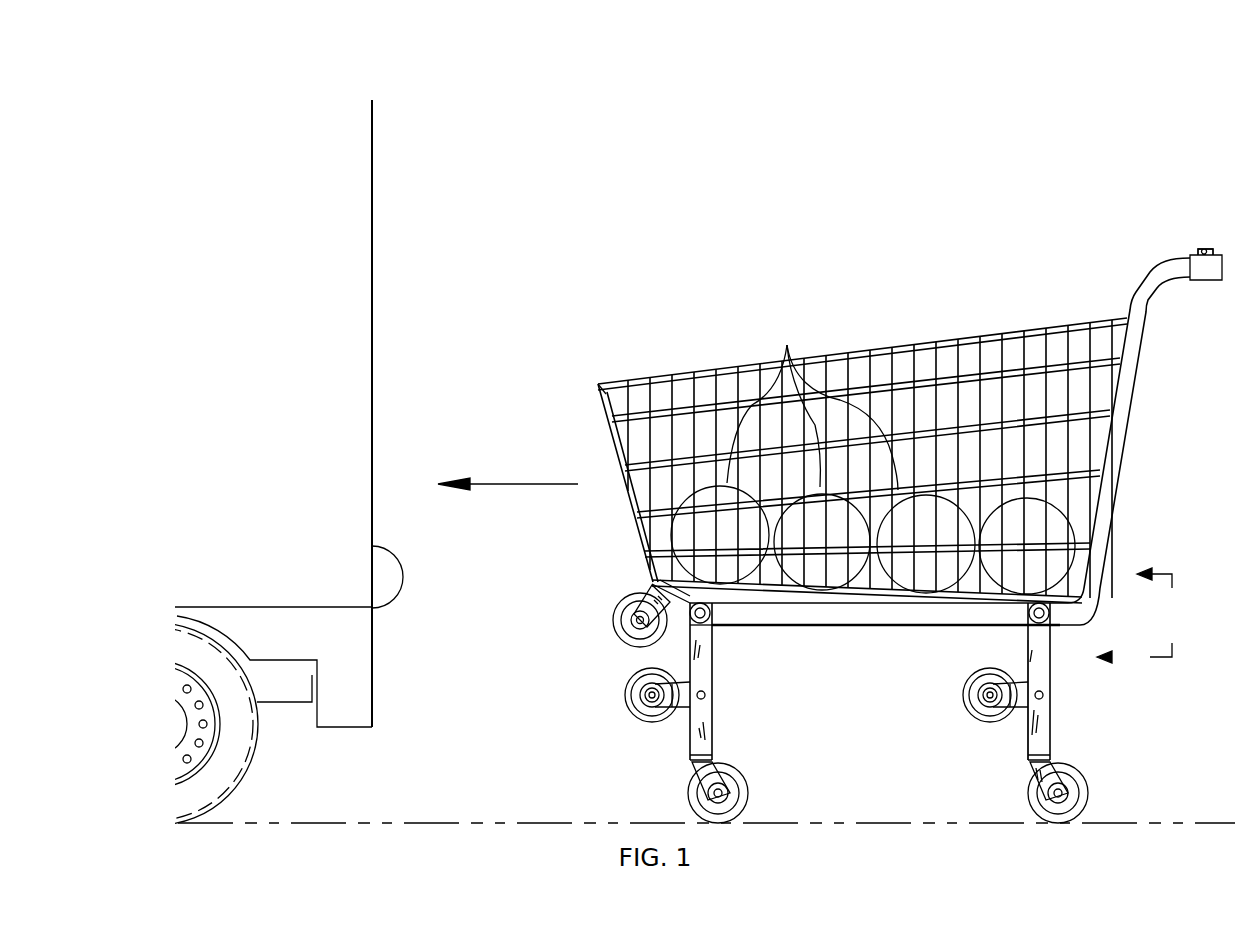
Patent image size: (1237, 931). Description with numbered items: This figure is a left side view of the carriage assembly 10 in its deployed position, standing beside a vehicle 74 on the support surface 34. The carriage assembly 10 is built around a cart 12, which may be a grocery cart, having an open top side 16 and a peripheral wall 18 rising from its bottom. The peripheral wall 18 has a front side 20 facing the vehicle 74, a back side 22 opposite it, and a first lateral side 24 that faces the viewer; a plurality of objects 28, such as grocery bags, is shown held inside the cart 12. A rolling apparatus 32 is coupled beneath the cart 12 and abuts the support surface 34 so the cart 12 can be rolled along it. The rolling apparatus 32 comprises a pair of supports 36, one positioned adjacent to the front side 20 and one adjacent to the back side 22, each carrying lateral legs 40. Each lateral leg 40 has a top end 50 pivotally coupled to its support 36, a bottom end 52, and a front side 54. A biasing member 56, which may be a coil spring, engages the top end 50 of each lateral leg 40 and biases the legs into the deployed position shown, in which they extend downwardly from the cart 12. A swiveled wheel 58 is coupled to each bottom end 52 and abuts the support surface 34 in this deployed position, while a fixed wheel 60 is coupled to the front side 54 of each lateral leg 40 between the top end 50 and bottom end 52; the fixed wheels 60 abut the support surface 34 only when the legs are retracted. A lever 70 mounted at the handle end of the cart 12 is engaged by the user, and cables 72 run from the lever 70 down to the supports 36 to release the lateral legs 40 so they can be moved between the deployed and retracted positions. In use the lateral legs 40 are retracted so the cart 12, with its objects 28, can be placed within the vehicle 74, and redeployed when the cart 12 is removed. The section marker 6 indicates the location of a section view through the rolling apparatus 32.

The carriage assembly 10 is at (993, 233).
The cart 12 is at (712, 360).
The open top side 16 is at (853, 350).
The peripheral wall 18 is at (632, 502).
The front side 20 is at (623, 468).
The back side 22 is at (1118, 472).
The first lateral side 24 is at (952, 372).
The objects 28 is at (788, 347).
The rolling apparatus 32 is at (680, 740).
The support surface 34 is at (1198, 823).
The supports 36 is at (713, 660).
The lateral legs 40 is at (708, 738).
The top end 50 is at (1062, 601).
The bottom end 52 is at (1037, 768).
The front side 54 is at (1028, 740).
The biasing member 56 is at (655, 584).
The swiveled wheels 58 is at (748, 788).
The fixed wheels 60 is at (623, 687).
The lever 70 is at (1201, 248).
The cables 72 is at (1140, 377).
The vehicle 74 is at (373, 187).
The section line 6 is at (1124, 616).